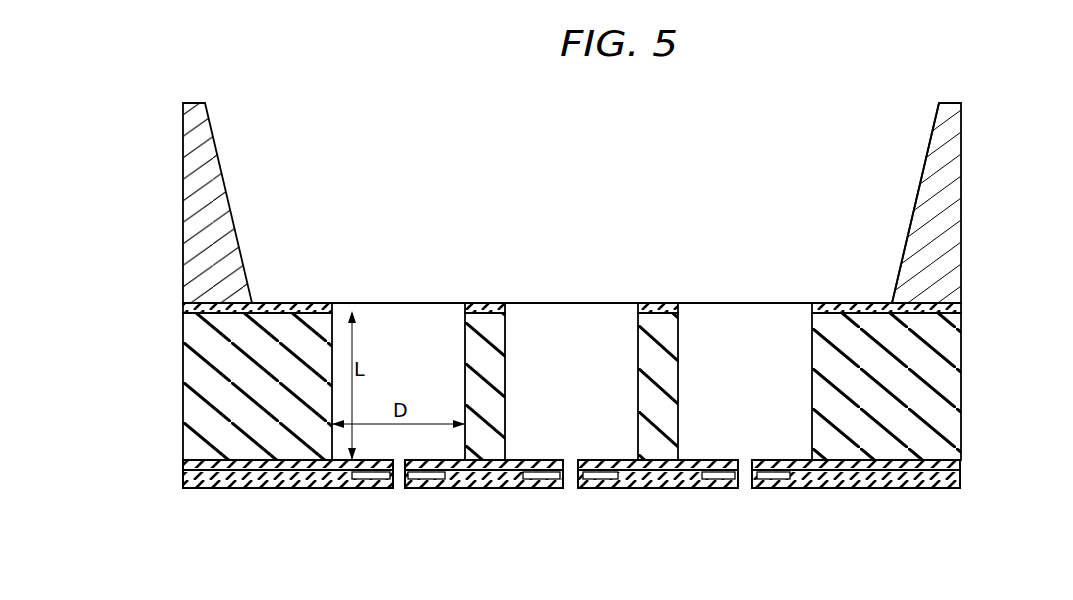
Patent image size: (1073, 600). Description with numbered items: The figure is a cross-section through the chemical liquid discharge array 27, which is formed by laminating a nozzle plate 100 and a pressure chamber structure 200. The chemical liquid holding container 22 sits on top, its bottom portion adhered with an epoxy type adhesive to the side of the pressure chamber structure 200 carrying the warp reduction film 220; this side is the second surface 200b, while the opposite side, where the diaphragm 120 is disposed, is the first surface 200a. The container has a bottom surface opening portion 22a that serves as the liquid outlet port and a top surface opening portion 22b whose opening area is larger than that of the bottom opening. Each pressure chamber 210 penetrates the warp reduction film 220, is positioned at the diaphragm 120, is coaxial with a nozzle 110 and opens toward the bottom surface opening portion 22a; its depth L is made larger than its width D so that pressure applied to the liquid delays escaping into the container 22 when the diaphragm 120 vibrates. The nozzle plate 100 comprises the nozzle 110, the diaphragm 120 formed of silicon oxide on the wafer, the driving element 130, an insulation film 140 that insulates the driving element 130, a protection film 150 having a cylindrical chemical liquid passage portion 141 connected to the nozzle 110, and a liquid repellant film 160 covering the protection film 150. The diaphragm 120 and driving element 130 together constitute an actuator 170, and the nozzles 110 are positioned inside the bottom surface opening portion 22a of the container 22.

The chemical liquid holding container 22 is at (961, 122).
The bottom surface opening portion 22a is at (884, 288).
The top surface opening portion 22b is at (906, 122).
The pressure chamber structure 200 is at (950, 381).
The first surface 200a is at (865, 480).
The second surface 200b is at (828, 303).
The pressure chamber 210 is at (795, 344).
The warp reduction film 220 is at (961, 308).
The nozzle plate 100 is at (620, 478).
The nozzle 110 is at (572, 462).
The diaphragm 120 is at (960, 462).
The driving element 130 is at (374, 490).
The insulation film 140 is at (960, 470).
The chemical liquid passage portion 141 is at (748, 476).
The protection film 150 is at (960, 481).
The liquid repellant film 160 is at (960, 488).
The actuator 170 is at (441, 530).
The chemical liquid discharge array 27 is at (950, 515).